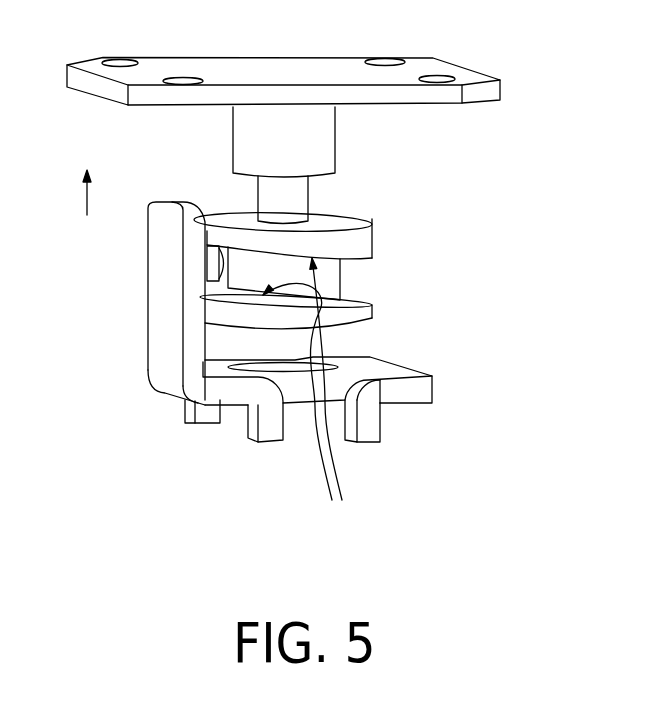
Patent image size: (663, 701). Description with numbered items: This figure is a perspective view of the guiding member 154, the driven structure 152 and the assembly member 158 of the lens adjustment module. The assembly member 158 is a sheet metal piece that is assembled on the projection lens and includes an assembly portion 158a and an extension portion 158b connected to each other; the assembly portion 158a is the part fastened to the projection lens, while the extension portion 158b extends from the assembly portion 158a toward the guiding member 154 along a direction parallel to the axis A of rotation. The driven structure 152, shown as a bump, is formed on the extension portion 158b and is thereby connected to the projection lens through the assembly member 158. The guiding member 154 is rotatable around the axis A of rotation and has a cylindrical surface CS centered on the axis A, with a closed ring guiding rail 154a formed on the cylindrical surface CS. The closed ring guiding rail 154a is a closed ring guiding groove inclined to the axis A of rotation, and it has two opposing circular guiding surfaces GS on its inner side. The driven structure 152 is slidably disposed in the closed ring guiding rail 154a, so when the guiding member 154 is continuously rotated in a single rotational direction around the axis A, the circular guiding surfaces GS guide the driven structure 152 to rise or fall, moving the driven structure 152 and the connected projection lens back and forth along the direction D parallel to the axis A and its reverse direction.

The driven structure 152 is at (212, 258).
The guiding member 154 is at (363, 235).
The closed ring guiding rail 154a is at (344, 277).
The assembly member 158 is at (290, 375).
The assembly portion 158a is at (299, 388).
The extension portion 158b is at (168, 365).
The axis of rotation A is at (283, 73).
The cylindrical surface CS is at (372, 243).
The direction D is at (82, 193).
The circular guiding surfaces GS is at (309, 394).